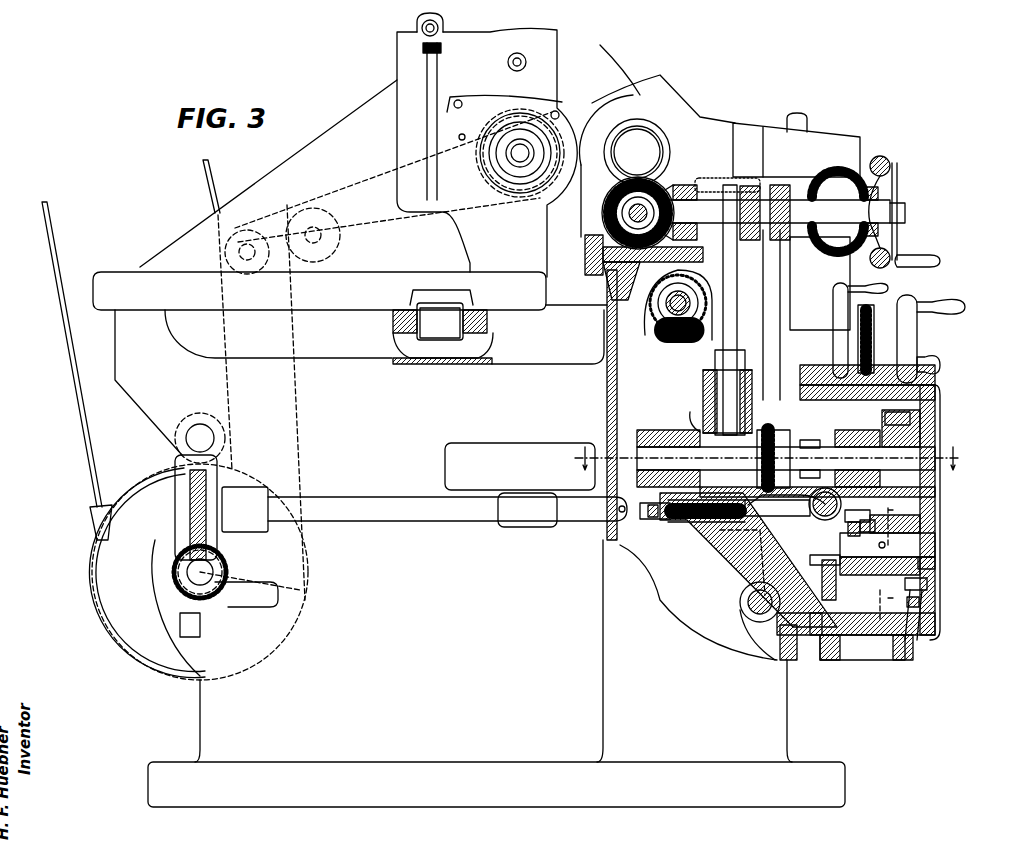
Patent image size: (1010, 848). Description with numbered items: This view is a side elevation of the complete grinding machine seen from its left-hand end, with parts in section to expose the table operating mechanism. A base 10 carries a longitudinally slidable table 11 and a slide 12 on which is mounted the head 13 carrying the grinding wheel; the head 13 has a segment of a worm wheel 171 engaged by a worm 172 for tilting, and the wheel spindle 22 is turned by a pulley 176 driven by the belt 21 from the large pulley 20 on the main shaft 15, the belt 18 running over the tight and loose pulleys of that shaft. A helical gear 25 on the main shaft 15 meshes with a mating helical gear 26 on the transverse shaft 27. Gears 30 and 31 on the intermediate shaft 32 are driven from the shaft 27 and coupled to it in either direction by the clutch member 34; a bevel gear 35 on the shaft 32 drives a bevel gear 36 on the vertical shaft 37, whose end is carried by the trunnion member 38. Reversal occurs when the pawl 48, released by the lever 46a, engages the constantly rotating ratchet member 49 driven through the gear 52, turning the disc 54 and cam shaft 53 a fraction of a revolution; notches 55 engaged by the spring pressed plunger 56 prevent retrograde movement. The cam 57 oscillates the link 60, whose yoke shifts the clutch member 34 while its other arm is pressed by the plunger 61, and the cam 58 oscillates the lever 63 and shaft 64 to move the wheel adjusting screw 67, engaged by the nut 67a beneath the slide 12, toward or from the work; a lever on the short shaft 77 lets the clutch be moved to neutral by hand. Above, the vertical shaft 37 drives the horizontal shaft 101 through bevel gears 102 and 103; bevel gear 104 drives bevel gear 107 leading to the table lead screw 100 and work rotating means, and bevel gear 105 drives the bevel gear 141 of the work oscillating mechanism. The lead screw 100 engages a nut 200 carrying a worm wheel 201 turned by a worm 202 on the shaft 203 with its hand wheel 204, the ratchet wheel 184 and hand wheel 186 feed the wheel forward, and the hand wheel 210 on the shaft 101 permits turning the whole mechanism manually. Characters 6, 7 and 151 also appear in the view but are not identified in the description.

The section line 6 is at (768, 458).
The section line 7 is at (893, 559).
The base 10 is at (773, 713).
The table 11 is at (598, 283).
The slide 12 is at (118, 275).
The head 13 is at (470, 63).
The main shaft 15 is at (205, 578).
The belt 18 is at (78, 427).
The large pulley 20 is at (104, 618).
The belt 21 is at (300, 420).
The grinding wheel spindle 22 is at (525, 148).
The helical gear 25 is at (308, 596).
The mating helical gear 26 is at (150, 482).
The transverse horizontal shaft 27 is at (440, 523).
The gear 30 is at (768, 428).
The gear 31 is at (870, 423).
The intermediate shaft 32 is at (935, 440).
The clutch member 34 is at (812, 438).
The bevel gear 35 is at (687, 432).
The bevel gear 36 is at (690, 412).
The vertically extending shaft 37 is at (722, 350).
The trunnion member 38 is at (703, 384).
The lever 46a is at (915, 650).
The pawl 48 is at (850, 508).
The ratchet member 49 is at (935, 566).
The gear 52 is at (822, 578).
The shaft 53 is at (935, 541).
The disc 54 is at (878, 520).
The notches 55 is at (928, 587).
The spring pressed plunger 56 is at (920, 610).
The annular face cam 57 is at (765, 638).
The face cam 58 is at (740, 555).
The link 60 is at (705, 528).
The spring pressed plunger 61 is at (670, 522).
The lever 63 is at (720, 590).
The shaft 64 is at (745, 606).
The wheel adjusting lead screw 67 is at (405, 336).
The nut 67a is at (440, 336).
The short shaft 77 is at (805, 505).
The lead screw 100 is at (648, 318).
The horizontal shaft 101 is at (782, 196).
The bevel gear 102 is at (716, 240).
The bevel gear 103 is at (752, 180).
The bevel gear 104 is at (674, 186).
The bevel gear 105 is at (838, 186).
The bevel gear 107 is at (625, 208).
The bevel gear 141 is at (866, 180).
The housing 151 is at (740, 125).
The segment of a worm wheel 171 is at (420, 48).
The worm 172 is at (445, 22).
The pulley 176 is at (483, 176).
The ratchet wheel 184 is at (905, 310).
The hand wheel 186 is at (910, 340).
The nut 200 is at (645, 303).
The worm wheel 201 is at (640, 345).
The worm 202 is at (607, 372).
The shaft 203 is at (752, 327).
The hand wheel 204 is at (870, 310).
The hand wheel 210 is at (898, 165).